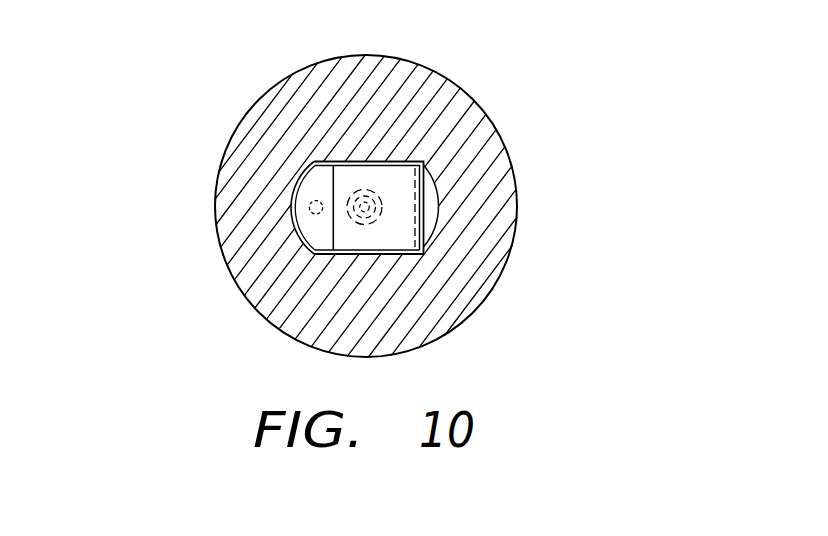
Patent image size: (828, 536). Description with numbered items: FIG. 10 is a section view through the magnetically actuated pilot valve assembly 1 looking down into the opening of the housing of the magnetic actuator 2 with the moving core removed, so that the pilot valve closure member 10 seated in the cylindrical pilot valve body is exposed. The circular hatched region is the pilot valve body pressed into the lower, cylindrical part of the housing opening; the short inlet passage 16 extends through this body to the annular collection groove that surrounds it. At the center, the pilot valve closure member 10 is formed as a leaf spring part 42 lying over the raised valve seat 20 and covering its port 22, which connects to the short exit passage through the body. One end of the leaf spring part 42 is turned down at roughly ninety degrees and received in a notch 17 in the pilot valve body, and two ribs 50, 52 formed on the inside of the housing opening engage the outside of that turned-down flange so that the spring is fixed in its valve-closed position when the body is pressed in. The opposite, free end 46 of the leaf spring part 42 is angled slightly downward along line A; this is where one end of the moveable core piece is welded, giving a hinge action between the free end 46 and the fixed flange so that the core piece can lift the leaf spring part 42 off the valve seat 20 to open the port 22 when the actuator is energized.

The magnetically actuated pilot valve assembly 1 is at (517, 148).
The magnetic actuator 2 is at (492, 123).
The pilot valve closure member 10 is at (427, 202).
The inlet passage 16 is at (309, 207).
The notch 17 is at (428, 222).
The valve seat 20 is at (367, 191).
The port 22 is at (288, 180).
The leaf spring part 42 is at (351, 190).
The free end 46 is at (333, 225).
The rib 50 is at (425, 170).
The rib 52 is at (428, 247).
The line A is at (314, 251).